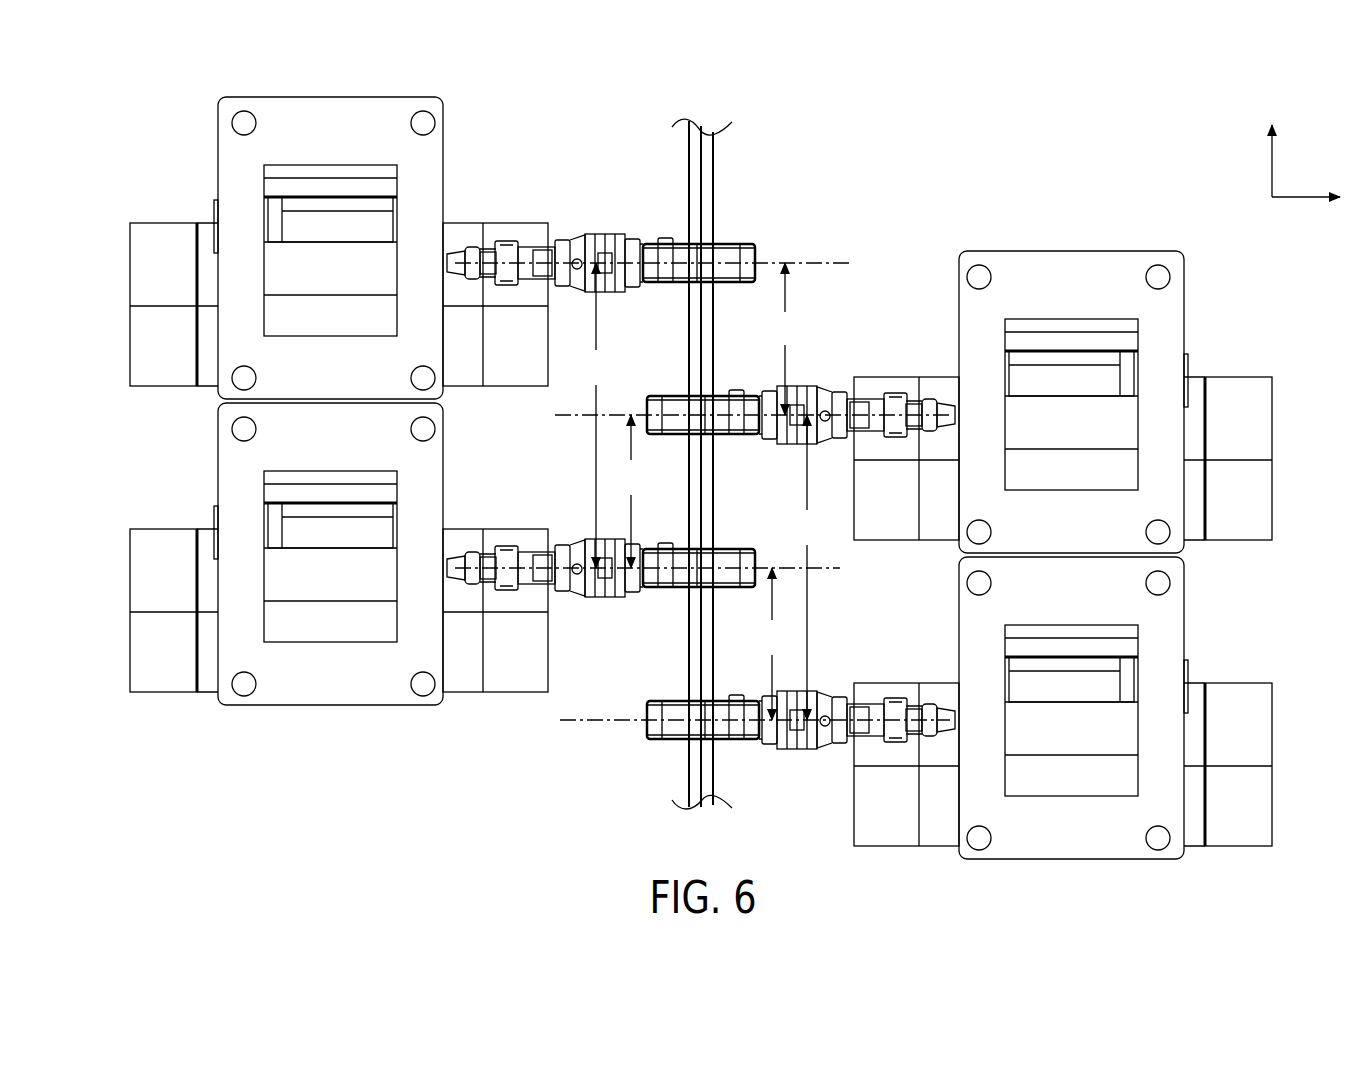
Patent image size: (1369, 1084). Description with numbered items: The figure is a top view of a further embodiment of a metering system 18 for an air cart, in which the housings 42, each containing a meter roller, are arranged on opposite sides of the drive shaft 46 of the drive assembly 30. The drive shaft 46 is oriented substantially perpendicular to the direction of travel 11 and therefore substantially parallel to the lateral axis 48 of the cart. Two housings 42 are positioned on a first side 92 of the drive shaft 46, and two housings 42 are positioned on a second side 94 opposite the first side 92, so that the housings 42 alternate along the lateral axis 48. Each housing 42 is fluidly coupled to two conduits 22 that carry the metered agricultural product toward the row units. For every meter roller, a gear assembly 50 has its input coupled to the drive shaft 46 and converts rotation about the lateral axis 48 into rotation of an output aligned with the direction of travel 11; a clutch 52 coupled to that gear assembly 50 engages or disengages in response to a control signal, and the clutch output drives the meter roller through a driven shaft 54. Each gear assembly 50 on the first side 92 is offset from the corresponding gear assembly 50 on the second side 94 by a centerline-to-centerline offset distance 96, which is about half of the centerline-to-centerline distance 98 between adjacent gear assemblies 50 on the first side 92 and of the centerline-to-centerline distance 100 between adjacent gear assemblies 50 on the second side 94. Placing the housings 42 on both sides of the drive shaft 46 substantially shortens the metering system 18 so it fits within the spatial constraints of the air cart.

The direction of travel 11 is at (1302, 197).
The metering system 18 is at (950, 172).
The conduits 22 is at (130, 272).
The drive assembly 30 is at (624, 202).
The housing 42 is at (240, 152).
The drive shaft 46 is at (688, 632).
The lateral axis 48 is at (1272, 168).
The gear assembly 50 is at (732, 257).
The clutch 52 is at (540, 248).
The driven shaft 54 is at (453, 250).
The first side 92 is at (1302, 592).
The second side 94 is at (124, 157).
The offset distance 96 is at (707, 491).
The centerline-to-centerline distance 98 is at (806, 567).
The centerline-to-centerline distance 100 is at (596, 415).